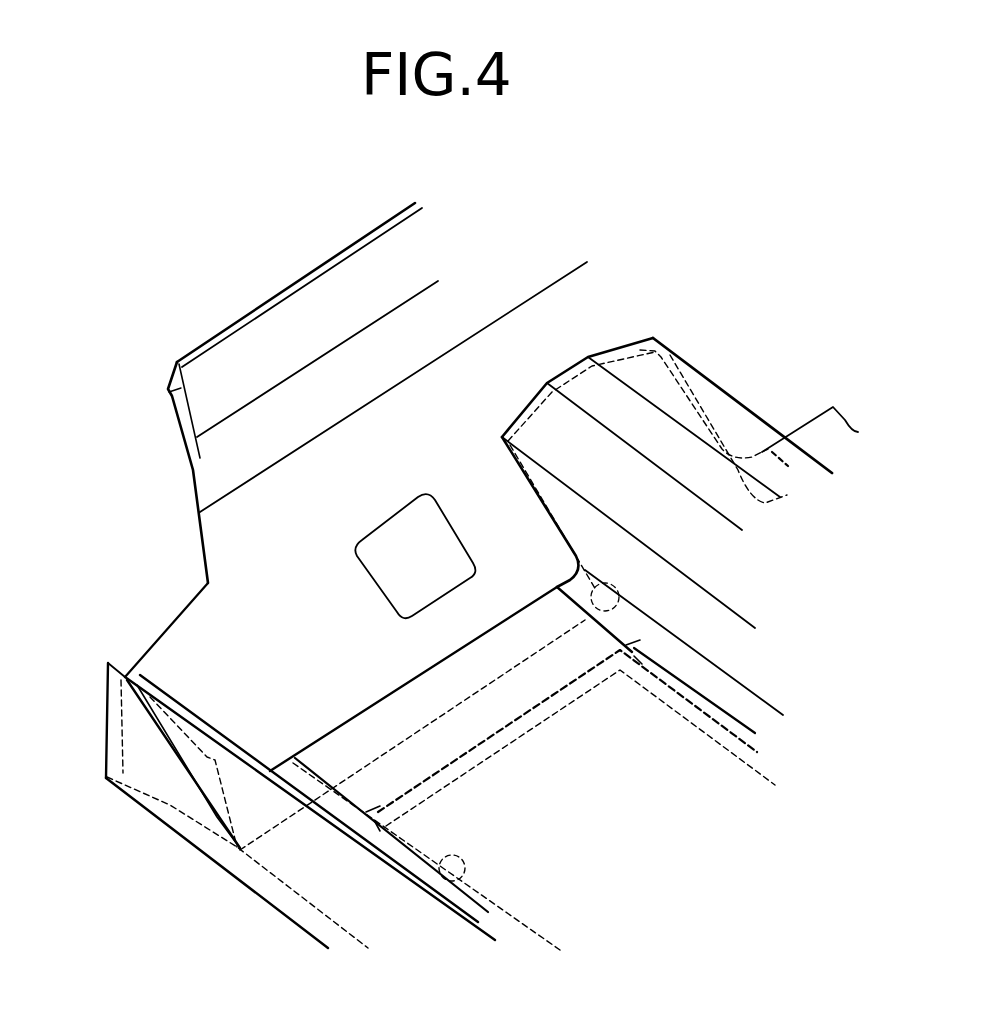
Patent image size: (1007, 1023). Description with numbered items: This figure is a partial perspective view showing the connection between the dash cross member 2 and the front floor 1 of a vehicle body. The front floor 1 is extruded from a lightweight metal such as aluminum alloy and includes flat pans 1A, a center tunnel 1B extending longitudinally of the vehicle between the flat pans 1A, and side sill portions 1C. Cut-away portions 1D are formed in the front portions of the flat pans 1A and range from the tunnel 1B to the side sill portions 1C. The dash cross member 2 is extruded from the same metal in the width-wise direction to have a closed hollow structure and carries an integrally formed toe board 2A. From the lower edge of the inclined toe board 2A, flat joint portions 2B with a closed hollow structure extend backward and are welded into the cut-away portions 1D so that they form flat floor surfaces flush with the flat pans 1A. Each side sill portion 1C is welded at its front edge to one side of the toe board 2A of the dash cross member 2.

The front floor 1 is at (755, 410).
The flat pans 1A is at (733, 683).
The center tunnel 1B is at (716, 397).
The side sill portions 1C is at (202, 845).
The cut-away portions 1D is at (452, 882).
The dash cross member 2 is at (283, 285).
The toe board 2A is at (217, 560).
The flat joint portions 2B is at (373, 723).